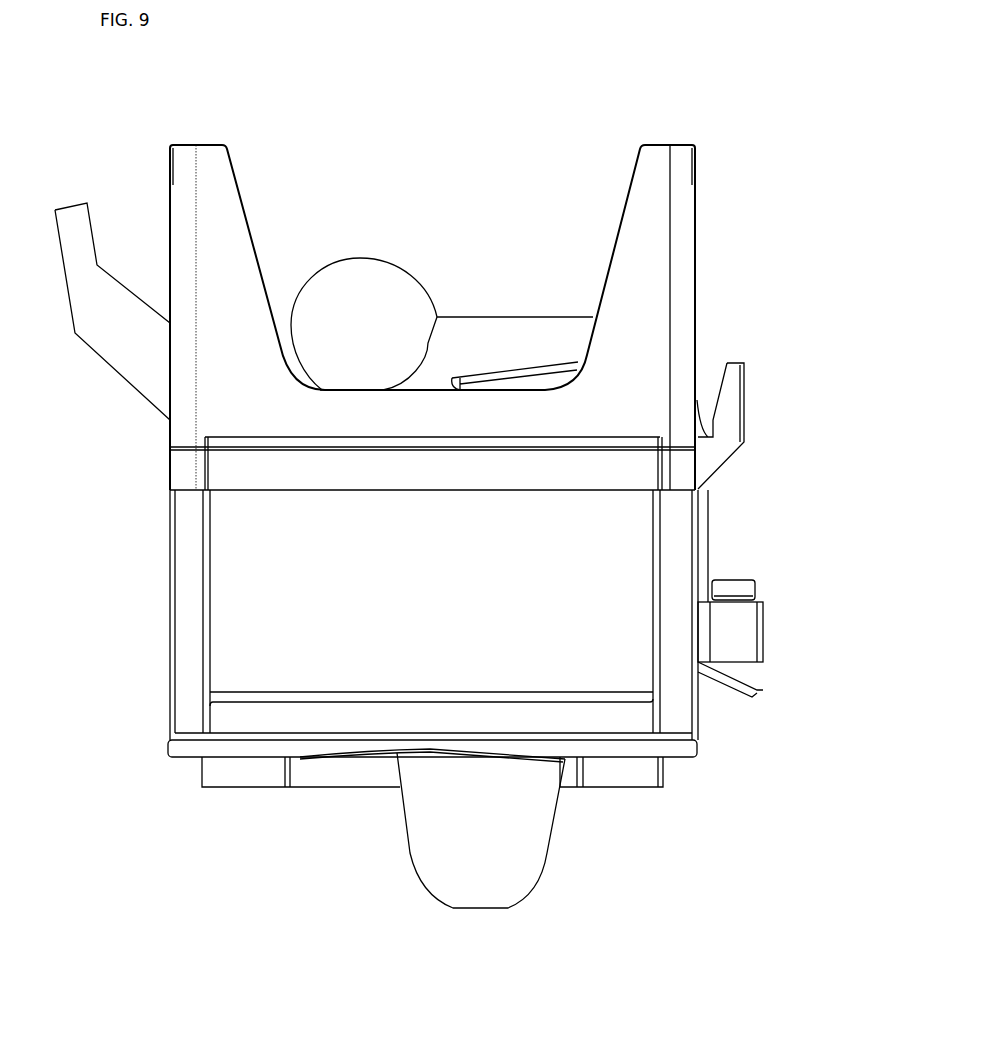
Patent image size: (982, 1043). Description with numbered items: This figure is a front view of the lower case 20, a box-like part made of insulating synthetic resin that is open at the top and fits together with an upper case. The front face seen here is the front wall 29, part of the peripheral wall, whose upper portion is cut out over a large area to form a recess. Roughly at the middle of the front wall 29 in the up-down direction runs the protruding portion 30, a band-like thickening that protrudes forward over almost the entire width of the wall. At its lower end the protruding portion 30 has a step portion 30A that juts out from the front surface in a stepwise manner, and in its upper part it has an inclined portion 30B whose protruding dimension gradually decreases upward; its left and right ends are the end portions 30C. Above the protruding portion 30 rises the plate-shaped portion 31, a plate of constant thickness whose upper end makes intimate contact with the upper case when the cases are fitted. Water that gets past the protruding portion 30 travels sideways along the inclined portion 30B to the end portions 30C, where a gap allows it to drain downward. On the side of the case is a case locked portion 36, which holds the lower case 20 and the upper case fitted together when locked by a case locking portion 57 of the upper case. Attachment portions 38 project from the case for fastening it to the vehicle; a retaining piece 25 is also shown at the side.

The lower case 20 is at (482, 128).
The retaining piece 25 is at (730, 410).
The front wall 29 is at (247, 648).
The protruding portion 30 is at (238, 478).
The step portion 30A is at (618, 493).
The inclined portion 30B is at (628, 442).
The end portions 30C is at (203, 470).
The plate-shaped portion 31 is at (473, 410).
The case locked portion 36 is at (742, 632).
The attachment portion 38 is at (83, 307).
The case locking portion 57 is at (745, 586).